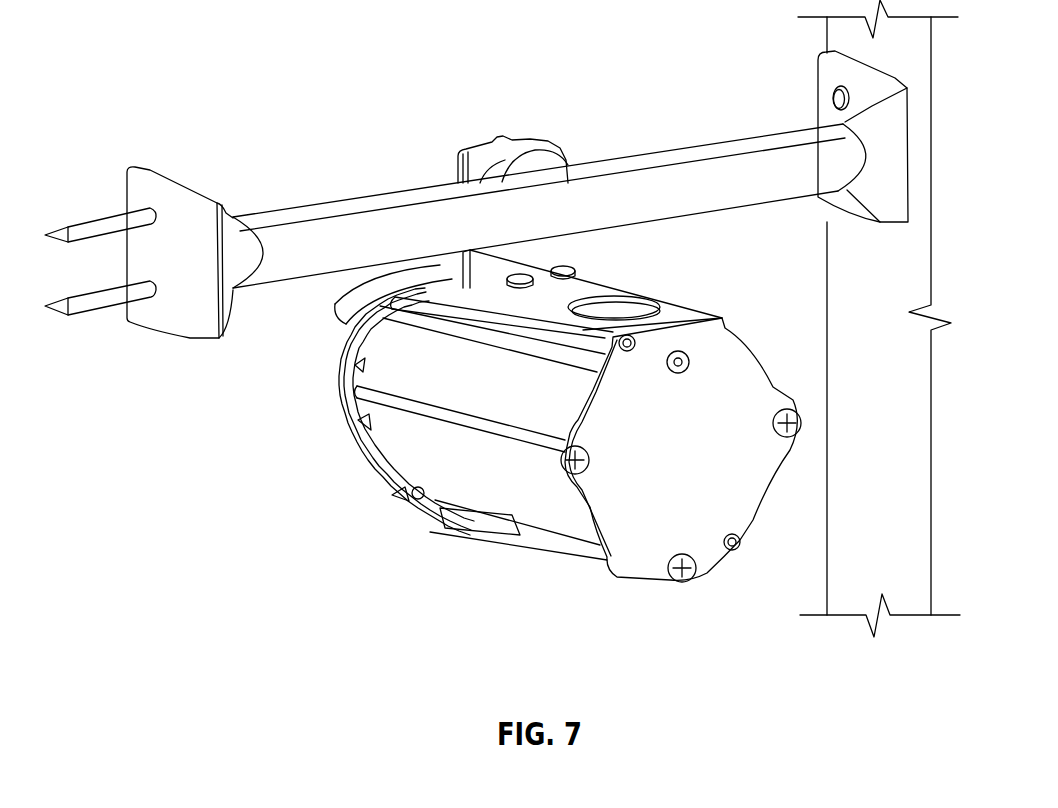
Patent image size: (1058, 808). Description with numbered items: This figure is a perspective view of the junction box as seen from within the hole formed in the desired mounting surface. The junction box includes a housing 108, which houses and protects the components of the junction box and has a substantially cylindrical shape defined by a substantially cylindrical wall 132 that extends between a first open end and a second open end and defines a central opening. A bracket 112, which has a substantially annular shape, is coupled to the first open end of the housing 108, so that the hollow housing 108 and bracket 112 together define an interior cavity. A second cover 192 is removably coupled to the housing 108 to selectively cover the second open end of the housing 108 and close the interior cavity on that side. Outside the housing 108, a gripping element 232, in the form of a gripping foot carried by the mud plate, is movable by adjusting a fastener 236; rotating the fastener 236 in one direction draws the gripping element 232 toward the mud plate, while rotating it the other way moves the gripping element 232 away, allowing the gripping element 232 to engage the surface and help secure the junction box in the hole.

The housing 108 is at (563, 505).
The bracket 112 is at (377, 457).
The cylindrical wall 132 is at (485, 477).
The second cover 192 is at (740, 383).
The gripping element 232 is at (333, 315).
The fastener 236 is at (583, 330).